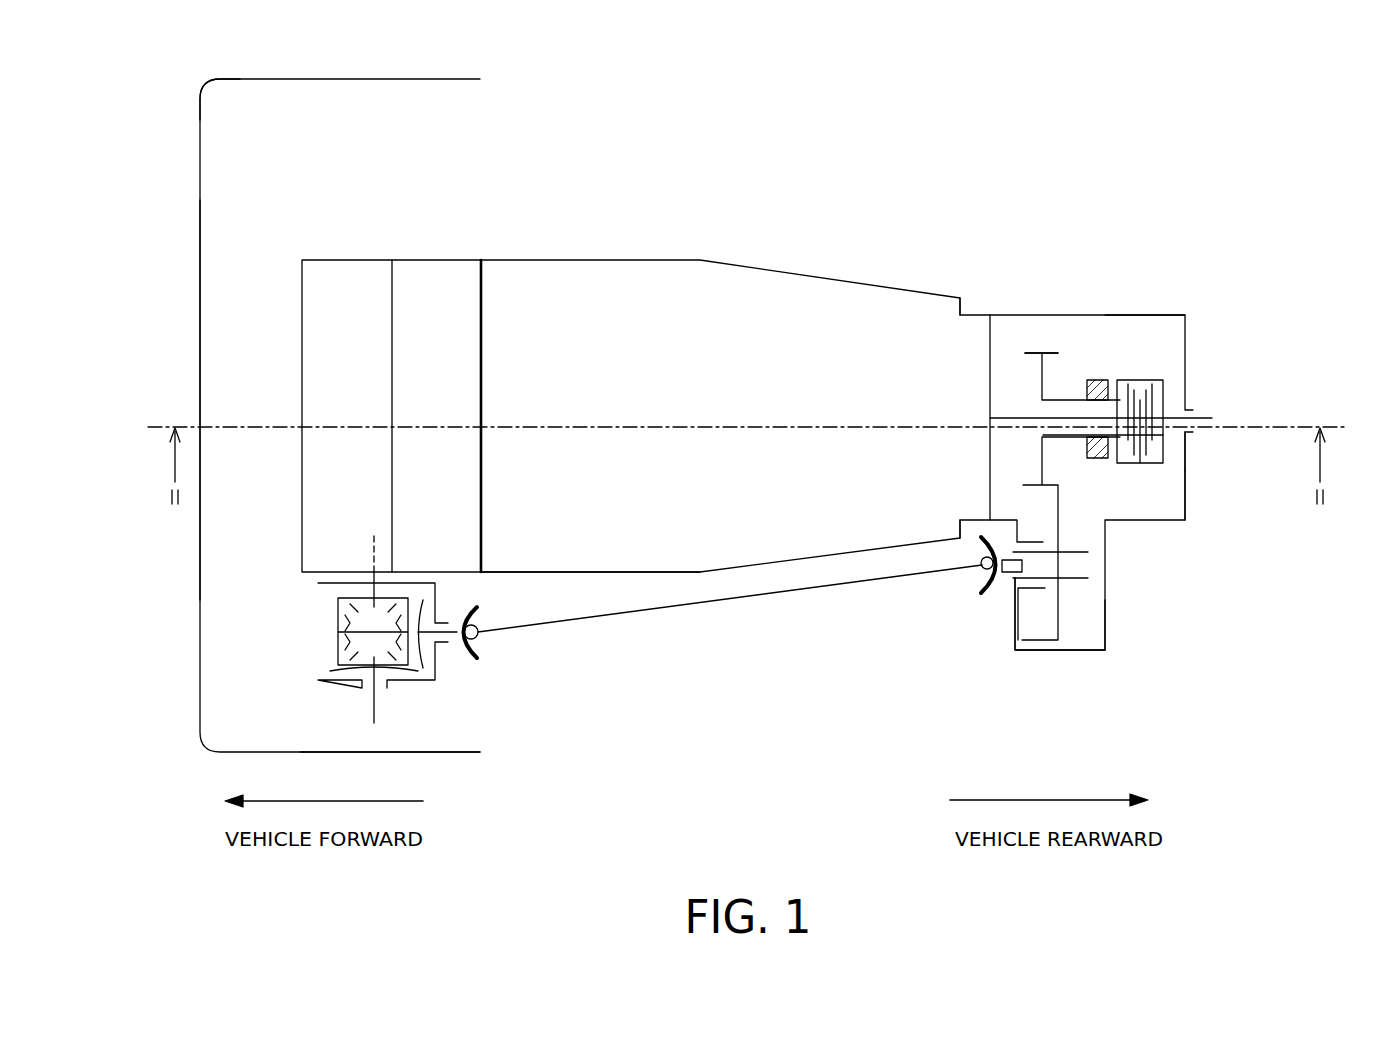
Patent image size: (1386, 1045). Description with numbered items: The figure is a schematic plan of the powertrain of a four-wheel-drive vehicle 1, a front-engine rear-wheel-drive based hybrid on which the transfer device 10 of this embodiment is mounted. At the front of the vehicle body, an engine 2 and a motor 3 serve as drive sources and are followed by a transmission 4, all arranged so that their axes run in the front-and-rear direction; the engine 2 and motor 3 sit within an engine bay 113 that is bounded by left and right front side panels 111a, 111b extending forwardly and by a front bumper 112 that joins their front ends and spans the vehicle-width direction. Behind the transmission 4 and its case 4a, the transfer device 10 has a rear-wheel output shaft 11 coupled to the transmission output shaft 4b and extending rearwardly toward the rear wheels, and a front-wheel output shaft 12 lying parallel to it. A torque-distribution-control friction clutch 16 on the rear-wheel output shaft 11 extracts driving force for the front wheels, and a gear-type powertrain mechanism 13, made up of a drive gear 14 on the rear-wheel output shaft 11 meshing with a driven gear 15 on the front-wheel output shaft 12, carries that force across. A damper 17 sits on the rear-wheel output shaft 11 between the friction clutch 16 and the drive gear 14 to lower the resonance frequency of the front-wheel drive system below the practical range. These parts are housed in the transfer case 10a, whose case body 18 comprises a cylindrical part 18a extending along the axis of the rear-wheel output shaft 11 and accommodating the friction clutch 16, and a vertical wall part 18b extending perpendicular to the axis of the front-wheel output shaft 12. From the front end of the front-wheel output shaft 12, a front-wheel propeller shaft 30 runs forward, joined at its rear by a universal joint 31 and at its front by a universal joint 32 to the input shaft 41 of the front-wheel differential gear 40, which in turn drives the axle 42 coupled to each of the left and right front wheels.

The four-wheel-drive vehicle 1 is at (975, 151).
The engine 2 is at (340, 260).
The motor 3 is at (416, 260).
The transmission 4 is at (597, 260).
The transmission case 4a is at (498, 572).
The output shaft 4b is at (975, 414).
The transfer device 10 is at (1185, 505).
The transfer case 10a is at (1185, 455).
The rear-wheel output shaft 11 is at (1203, 418).
The front-wheel output shaft 12 is at (1075, 580).
The powertrain mechanism 13 is at (1043, 343).
The drive gear 14 is at (1050, 352).
The driven gear 15 is at (1038, 640).
The torque-distribution-control friction clutch 16 is at (1135, 380).
The damper 17 is at (1093, 460).
The case body 18 is at (1162, 520).
The cylindrical part 18a is at (1136, 315).
The vertical wall part 18b is at (1105, 625).
The front-wheel propeller shaft 30 is at (840, 590).
The universal joint 31 is at (985, 580).
The universal joint 32 is at (490, 653).
The front-wheel differential gear 40 is at (400, 682).
The input shaft 41 is at (452, 640).
The axle 42 is at (372, 707).
The front side panel 111a is at (272, 79).
The front side panel 111b is at (456, 752).
The front bumper 112 is at (200, 250).
The engine bay 113 is at (238, 135).